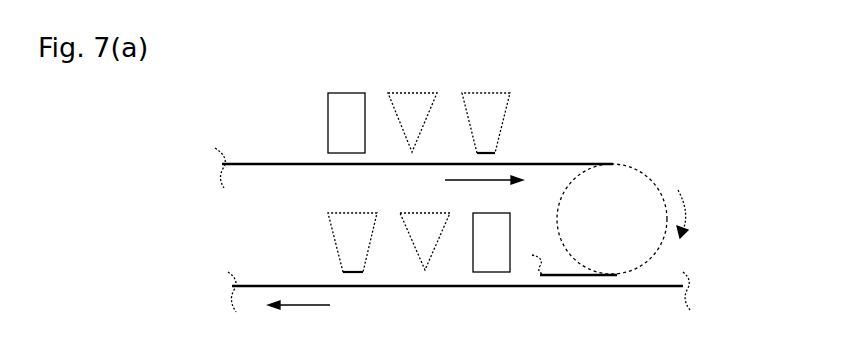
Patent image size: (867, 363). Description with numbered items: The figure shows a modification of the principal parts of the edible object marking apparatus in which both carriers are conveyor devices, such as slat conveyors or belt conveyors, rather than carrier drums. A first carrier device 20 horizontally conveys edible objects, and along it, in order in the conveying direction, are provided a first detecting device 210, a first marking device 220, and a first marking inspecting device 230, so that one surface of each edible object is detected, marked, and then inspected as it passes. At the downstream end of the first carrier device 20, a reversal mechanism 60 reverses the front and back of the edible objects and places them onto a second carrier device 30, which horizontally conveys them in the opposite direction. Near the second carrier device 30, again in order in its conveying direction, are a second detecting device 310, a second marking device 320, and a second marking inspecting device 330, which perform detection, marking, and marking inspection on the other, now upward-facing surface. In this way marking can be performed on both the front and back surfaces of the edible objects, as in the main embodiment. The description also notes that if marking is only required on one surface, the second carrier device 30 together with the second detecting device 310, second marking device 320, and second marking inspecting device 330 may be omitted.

The first carrier device 20 is at (272, 160).
The second carrier device 30 is at (288, 282).
The reversal mechanism 60 is at (640, 188).
The first detecting device 210 is at (350, 108).
The first marking device 220 is at (418, 105).
The first marking inspecting device 230 is at (486, 105).
The second detecting device 310 is at (492, 258).
The second marking device 320 is at (414, 255).
The second marking inspecting device 330 is at (358, 262).